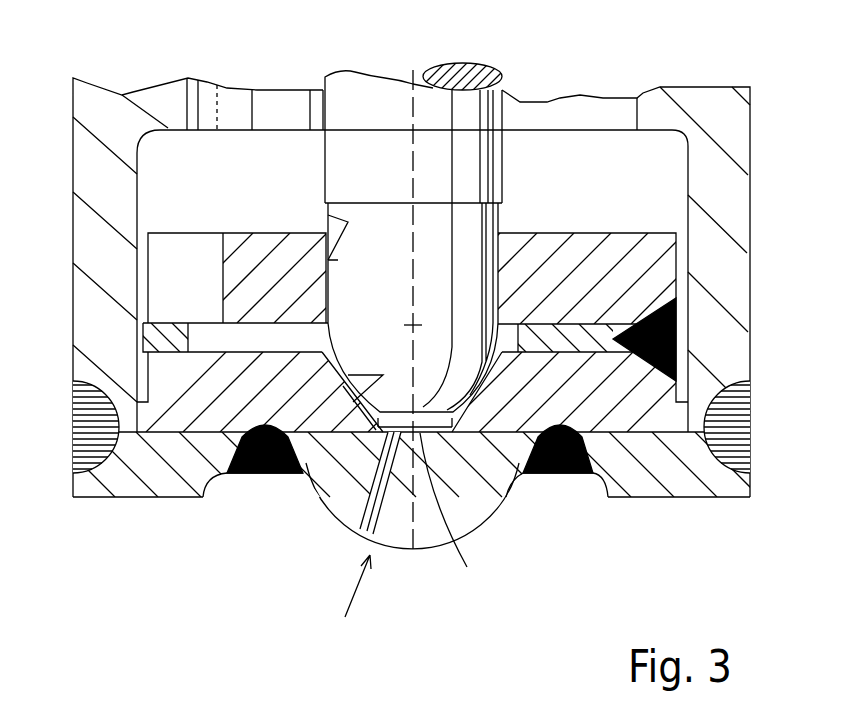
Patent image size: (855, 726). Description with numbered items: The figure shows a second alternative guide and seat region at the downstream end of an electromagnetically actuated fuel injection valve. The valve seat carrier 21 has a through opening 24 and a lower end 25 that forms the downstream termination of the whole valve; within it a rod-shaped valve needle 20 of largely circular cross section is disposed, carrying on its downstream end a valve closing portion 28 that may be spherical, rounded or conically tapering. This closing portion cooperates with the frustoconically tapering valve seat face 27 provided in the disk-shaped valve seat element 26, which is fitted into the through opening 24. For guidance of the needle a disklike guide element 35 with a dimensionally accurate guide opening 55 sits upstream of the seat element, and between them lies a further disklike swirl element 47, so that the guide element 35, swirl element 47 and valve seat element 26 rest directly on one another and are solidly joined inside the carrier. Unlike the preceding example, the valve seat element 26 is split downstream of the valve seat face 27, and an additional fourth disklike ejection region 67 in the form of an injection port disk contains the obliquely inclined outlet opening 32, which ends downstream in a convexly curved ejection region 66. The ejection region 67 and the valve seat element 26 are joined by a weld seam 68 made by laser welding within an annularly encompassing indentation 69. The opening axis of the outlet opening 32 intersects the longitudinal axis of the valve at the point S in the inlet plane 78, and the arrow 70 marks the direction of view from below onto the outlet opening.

The valve needle 20 is at (429, 308).
The valve seat carrier 21 is at (700, 100).
The through opening 24 is at (634, 107).
The lower end 25 is at (738, 292).
The valve seat element 26 is at (663, 427).
The valve seat face 27 is at (317, 493).
The valve closing portion 28 is at (413, 307).
The outlet opening 32 is at (363, 535).
The guide element 35 is at (257, 243).
The swirl element 47 is at (548, 333).
The guide opening 55 is at (330, 213).
The ejection region 66 is at (467, 517).
The ejection region 67 is at (172, 473).
The weld seam 68 is at (570, 470).
The indentation 69 is at (603, 498).
The arrow 70 is at (357, 595).
The inlet plane 78 is at (507, 497).
The point of intersection S is at (454, 508).